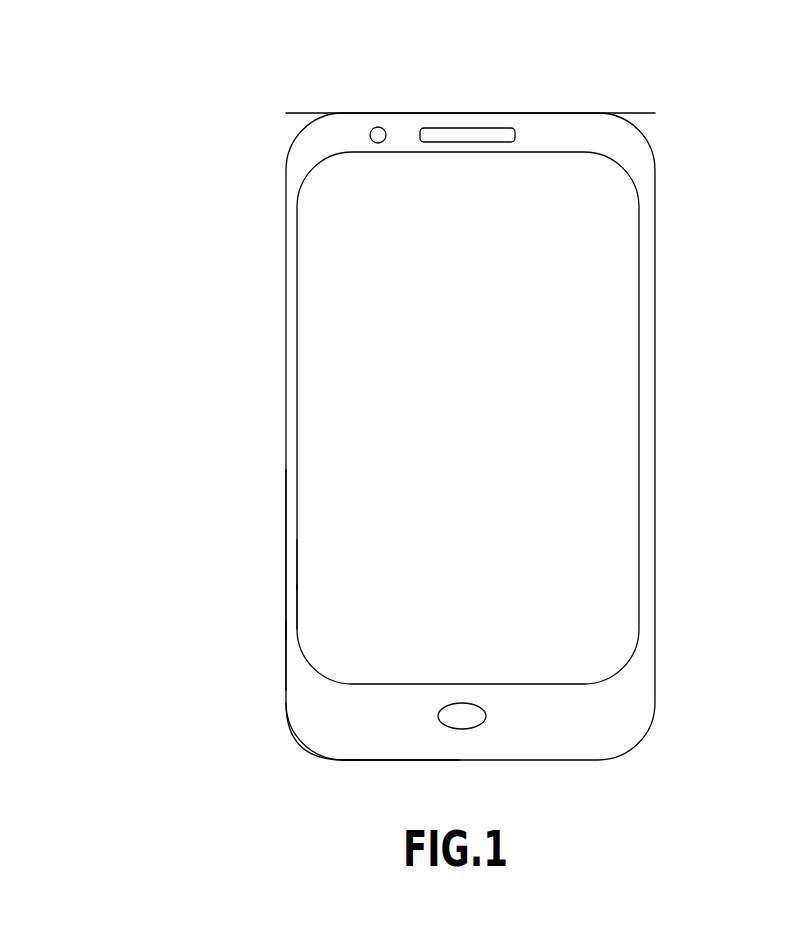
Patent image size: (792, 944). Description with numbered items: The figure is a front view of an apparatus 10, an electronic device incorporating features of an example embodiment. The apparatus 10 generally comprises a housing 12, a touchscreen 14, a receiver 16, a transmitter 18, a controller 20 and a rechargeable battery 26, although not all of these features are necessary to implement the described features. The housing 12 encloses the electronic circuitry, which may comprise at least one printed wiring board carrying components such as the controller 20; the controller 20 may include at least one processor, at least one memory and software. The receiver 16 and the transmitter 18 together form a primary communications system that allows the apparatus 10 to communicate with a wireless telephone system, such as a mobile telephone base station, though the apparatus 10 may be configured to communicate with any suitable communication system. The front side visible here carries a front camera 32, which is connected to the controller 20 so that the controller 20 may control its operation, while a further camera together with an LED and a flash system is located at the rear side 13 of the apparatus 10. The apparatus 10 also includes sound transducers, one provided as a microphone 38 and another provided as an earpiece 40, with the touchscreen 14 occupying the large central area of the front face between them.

The apparatus 10 is at (663, 129).
The housing 12 is at (655, 432).
The rear side 13 is at (368, 748).
The touchscreen 14 is at (313, 370).
The receiver 16 is at (288, 515).
The transmitter 18 is at (290, 563).
The controller 20 is at (290, 608).
The rechargeable battery 26 is at (284, 648).
The front camera 32 is at (383, 128).
The microphone 38 is at (468, 720).
The earpiece 40 is at (488, 135).